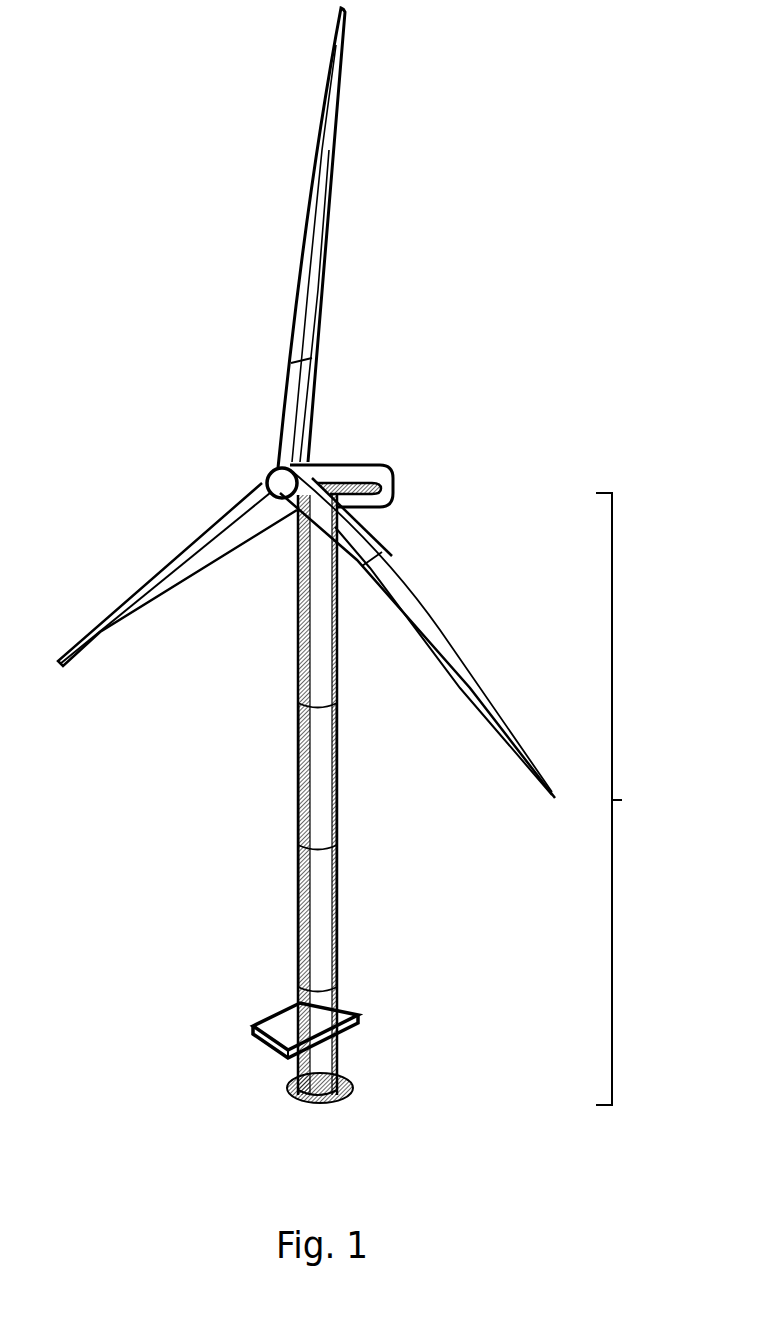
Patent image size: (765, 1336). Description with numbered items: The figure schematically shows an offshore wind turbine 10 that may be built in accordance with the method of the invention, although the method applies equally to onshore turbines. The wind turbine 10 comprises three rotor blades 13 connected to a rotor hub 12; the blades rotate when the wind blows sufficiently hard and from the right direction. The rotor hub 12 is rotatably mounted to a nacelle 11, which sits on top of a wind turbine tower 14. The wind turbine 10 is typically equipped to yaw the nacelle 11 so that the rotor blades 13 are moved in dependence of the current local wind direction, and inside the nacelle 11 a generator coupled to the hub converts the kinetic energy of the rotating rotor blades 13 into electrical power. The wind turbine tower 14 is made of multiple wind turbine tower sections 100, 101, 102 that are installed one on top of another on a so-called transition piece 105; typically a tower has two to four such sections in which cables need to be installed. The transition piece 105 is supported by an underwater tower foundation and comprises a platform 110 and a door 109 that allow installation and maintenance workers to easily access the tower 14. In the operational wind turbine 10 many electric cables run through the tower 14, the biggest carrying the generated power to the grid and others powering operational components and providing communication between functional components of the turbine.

The wind turbine 10 is at (370, 556).
The nacelle 11 is at (398, 492).
The rotor hub 12 is at (270, 468).
The rotor blades 13 is at (298, 268).
The wind turbine tower 14 is at (639, 799).
The wind turbine tower section 100 is at (256, 772).
The wind turbine tower section 101 is at (298, 742).
The wind turbine tower section 102 is at (298, 882).
The transition piece 105 is at (340, 1058).
The door 109 is at (293, 1006).
The platform 110 is at (262, 1040).